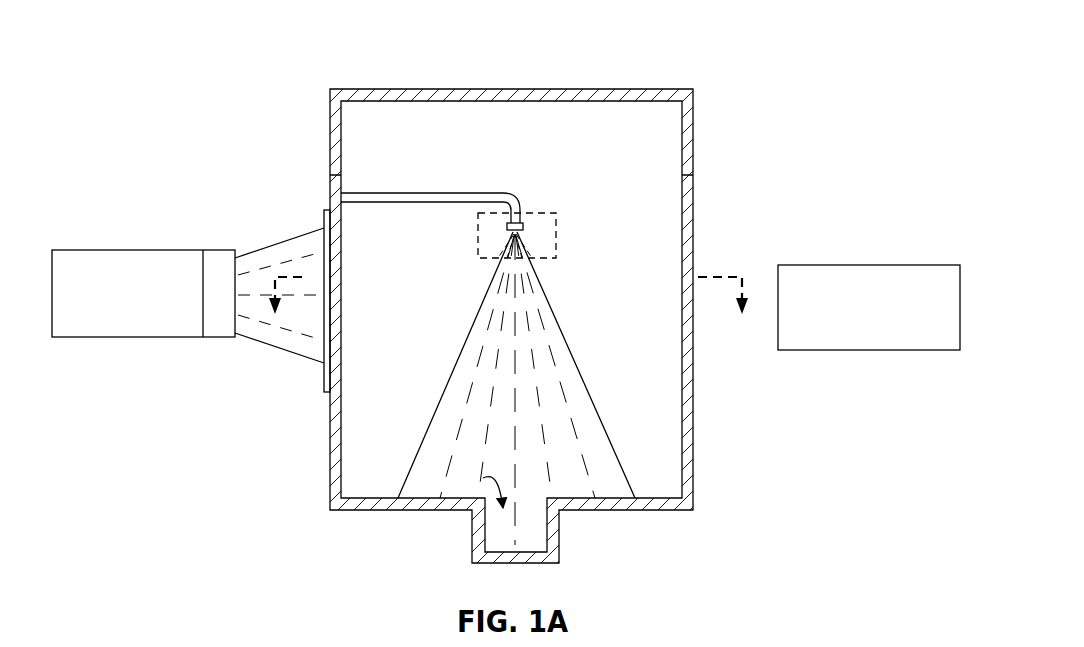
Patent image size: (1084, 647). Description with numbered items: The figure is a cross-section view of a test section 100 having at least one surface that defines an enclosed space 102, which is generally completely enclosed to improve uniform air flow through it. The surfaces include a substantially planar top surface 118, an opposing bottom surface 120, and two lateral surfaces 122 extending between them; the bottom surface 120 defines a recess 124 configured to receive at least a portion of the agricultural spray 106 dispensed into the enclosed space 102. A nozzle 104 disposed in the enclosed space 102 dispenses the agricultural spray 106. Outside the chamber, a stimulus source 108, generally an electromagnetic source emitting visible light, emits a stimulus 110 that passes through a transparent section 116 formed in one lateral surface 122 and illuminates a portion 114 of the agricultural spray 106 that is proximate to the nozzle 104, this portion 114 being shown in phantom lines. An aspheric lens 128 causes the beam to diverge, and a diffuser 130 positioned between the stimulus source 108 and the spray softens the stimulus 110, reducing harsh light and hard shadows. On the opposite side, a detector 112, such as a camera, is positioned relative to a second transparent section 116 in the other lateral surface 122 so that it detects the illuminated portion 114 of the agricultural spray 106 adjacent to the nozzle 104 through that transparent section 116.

The test section 100 is at (715, 45).
The enclosed space 102 is at (648, 148).
The nozzle 104 is at (523, 226).
The agricultural spray 106 is at (556, 306).
The stimulus source 108 is at (103, 250).
The stimulus 110 is at (268, 248).
The detector 112 is at (823, 265).
The portion of the agricultural spray 114 is at (478, 243).
The transparent section 116 is at (330, 213).
The top surface 118 is at (574, 100).
The bottom surface 120 is at (615, 511).
The lateral surfaces 122 is at (330, 455).
The recess 124 is at (483, 478).
The aspheric lens 128 is at (213, 250).
The diffuser 130 is at (325, 212).